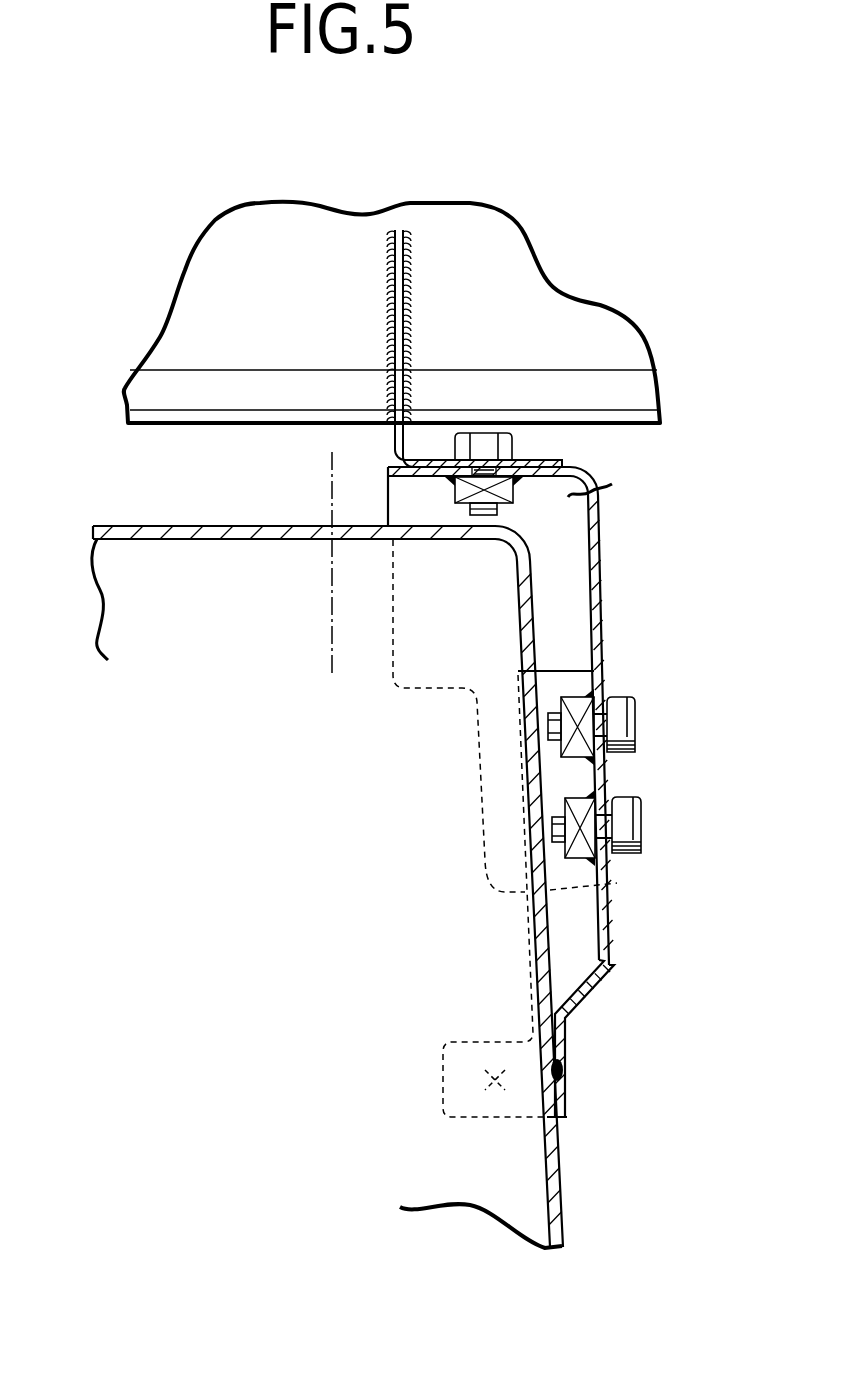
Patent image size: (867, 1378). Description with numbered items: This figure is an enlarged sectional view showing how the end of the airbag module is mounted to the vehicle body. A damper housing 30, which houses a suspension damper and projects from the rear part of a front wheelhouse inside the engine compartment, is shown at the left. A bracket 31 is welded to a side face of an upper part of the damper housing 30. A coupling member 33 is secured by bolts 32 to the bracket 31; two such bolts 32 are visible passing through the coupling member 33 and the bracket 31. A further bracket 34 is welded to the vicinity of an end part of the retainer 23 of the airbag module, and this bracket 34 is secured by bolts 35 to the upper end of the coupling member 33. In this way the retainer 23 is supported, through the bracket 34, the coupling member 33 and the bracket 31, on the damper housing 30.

The retainer 23 is at (300, 237).
The damper housing 30 is at (198, 528).
The bracket 31 is at (613, 922).
The bolts 32 is at (632, 818).
The coupling member 33 is at (598, 556).
The bracket 34 is at (534, 460).
The bolts 35 is at (485, 442).